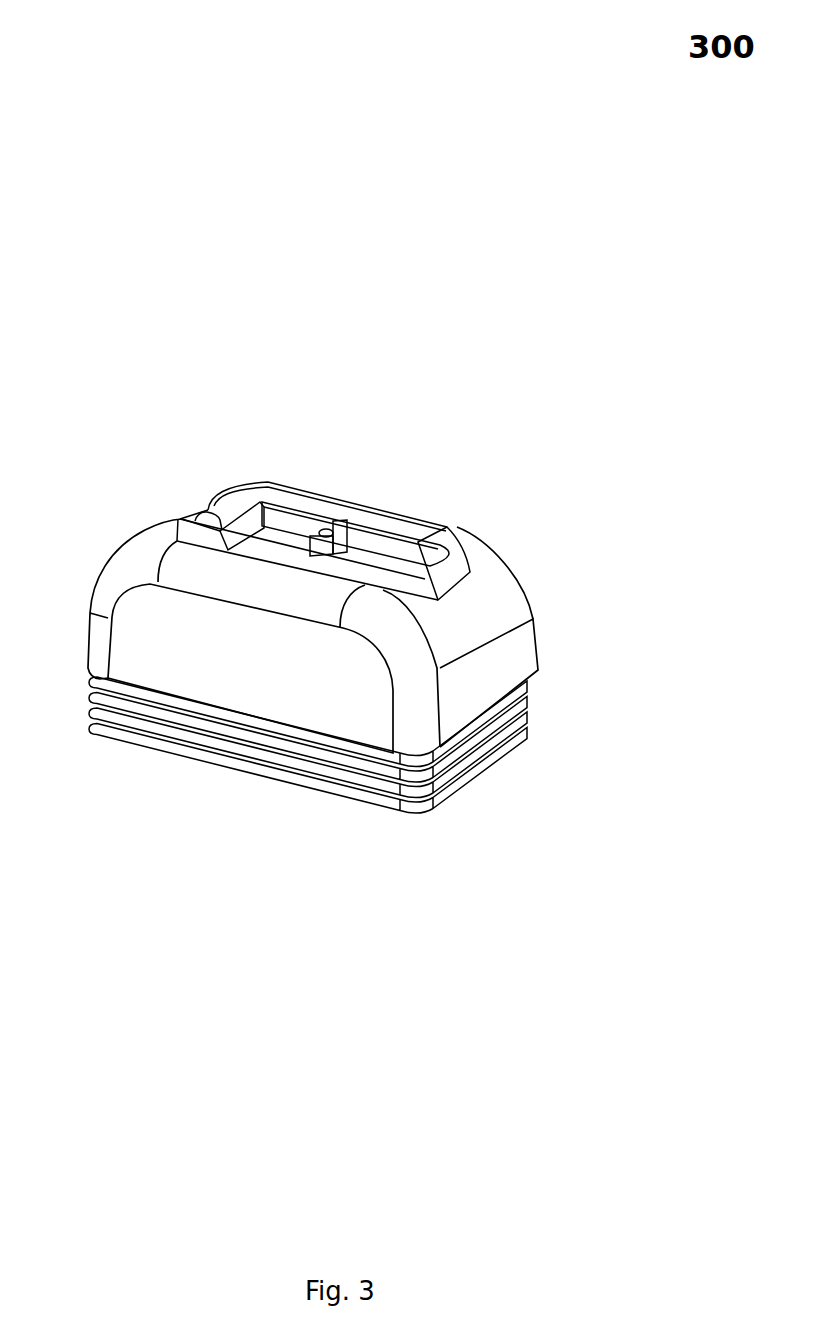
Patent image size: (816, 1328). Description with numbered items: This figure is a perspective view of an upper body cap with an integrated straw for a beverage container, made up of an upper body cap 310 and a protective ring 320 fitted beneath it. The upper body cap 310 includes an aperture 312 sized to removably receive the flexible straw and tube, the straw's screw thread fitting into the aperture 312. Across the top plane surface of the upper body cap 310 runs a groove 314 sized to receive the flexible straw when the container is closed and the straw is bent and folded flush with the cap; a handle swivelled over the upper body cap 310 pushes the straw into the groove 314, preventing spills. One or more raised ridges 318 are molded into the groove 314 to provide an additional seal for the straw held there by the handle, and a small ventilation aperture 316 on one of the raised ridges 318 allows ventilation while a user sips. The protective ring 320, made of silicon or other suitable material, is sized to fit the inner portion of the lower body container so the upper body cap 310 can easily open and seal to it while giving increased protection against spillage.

The upper body cap 310 is at (278, 668).
The aperture 312 is at (193, 517).
The groove 314 is at (432, 572).
The small ventilation aperture 316 is at (331, 521).
The raised ridges 318 is at (247, 503).
The protective ring 320 is at (470, 768).